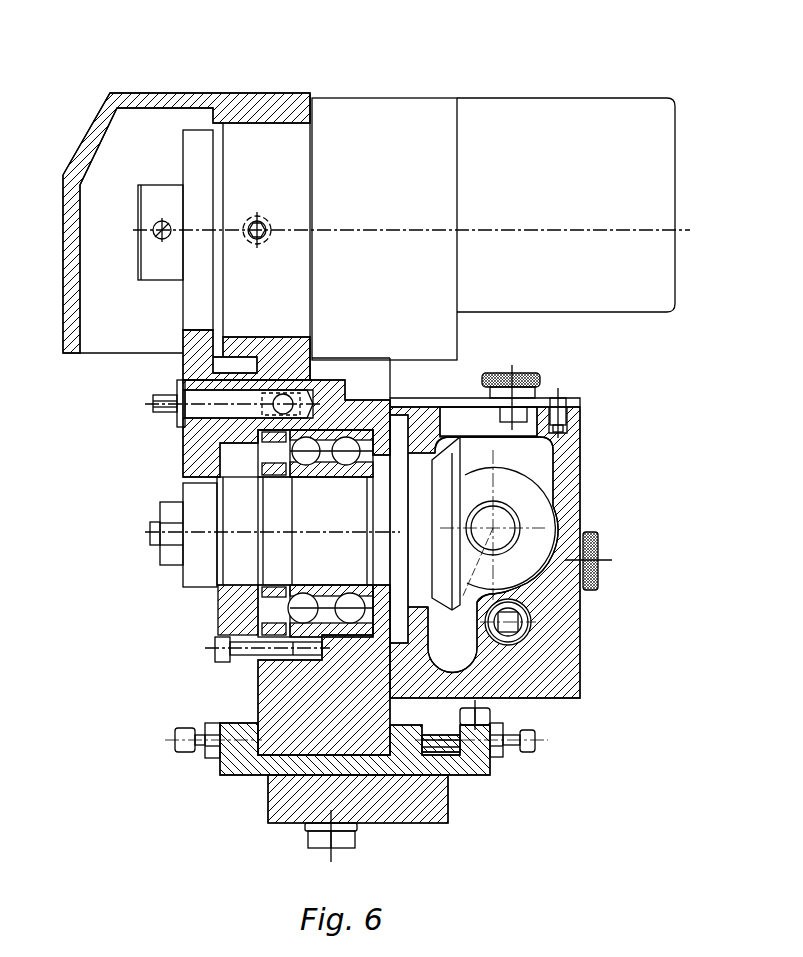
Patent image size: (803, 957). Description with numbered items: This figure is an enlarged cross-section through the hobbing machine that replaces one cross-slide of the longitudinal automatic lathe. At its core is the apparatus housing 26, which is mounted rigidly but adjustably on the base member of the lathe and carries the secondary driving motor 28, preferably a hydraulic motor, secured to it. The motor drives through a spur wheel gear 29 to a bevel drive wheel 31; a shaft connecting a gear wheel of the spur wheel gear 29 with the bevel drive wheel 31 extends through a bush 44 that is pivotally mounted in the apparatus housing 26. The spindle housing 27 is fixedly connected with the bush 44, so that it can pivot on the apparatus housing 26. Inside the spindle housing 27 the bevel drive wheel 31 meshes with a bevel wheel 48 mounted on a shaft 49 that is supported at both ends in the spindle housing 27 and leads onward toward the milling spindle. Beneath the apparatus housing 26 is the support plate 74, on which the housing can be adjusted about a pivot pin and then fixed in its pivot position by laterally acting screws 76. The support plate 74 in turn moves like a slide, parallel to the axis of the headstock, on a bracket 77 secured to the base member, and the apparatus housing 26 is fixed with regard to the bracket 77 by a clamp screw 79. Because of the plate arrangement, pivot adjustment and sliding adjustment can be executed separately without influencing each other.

The apparatus housing 26 is at (267, 705).
The spindle housing 27 is at (568, 647).
The secondary driving motor 28 is at (573, 115).
The spur wheel gear 29 is at (170, 455).
The bevel drive wheel 31 is at (457, 466).
The bush 44 is at (338, 524).
The bevel wheel 48 is at (532, 510).
The shaft 49 is at (500, 515).
The support plate 74 is at (329, 758).
The laterally acting screws 76 is at (175, 737).
The bracket 77 is at (427, 807).
The clamp screw 79 is at (318, 838).